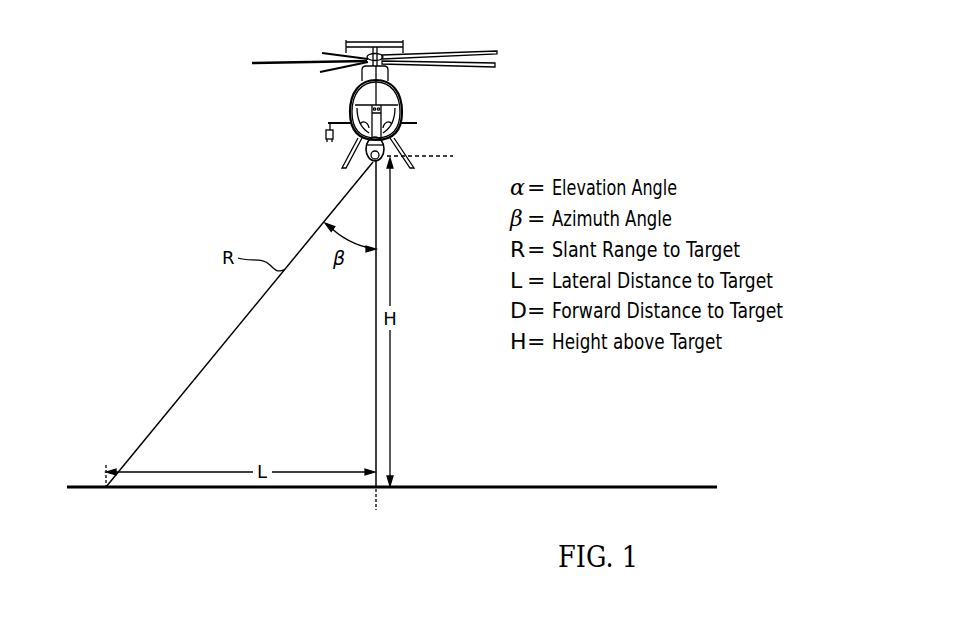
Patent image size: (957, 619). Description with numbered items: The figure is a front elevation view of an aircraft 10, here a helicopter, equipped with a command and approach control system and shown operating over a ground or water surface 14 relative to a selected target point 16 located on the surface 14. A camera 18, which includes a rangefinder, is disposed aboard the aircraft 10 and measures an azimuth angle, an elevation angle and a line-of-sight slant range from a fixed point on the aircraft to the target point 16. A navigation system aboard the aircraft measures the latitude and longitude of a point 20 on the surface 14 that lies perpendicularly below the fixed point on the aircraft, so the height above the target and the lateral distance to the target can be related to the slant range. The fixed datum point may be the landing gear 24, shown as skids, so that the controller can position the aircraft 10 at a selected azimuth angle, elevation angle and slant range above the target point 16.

The aircraft 10 is at (400, 93).
The ground or water surface 14 is at (523, 484).
The target point 16 is at (98, 474).
The camera 18 is at (394, 145).
The point on the surface 20 is at (374, 488).
The landing gear 24 is at (342, 165).